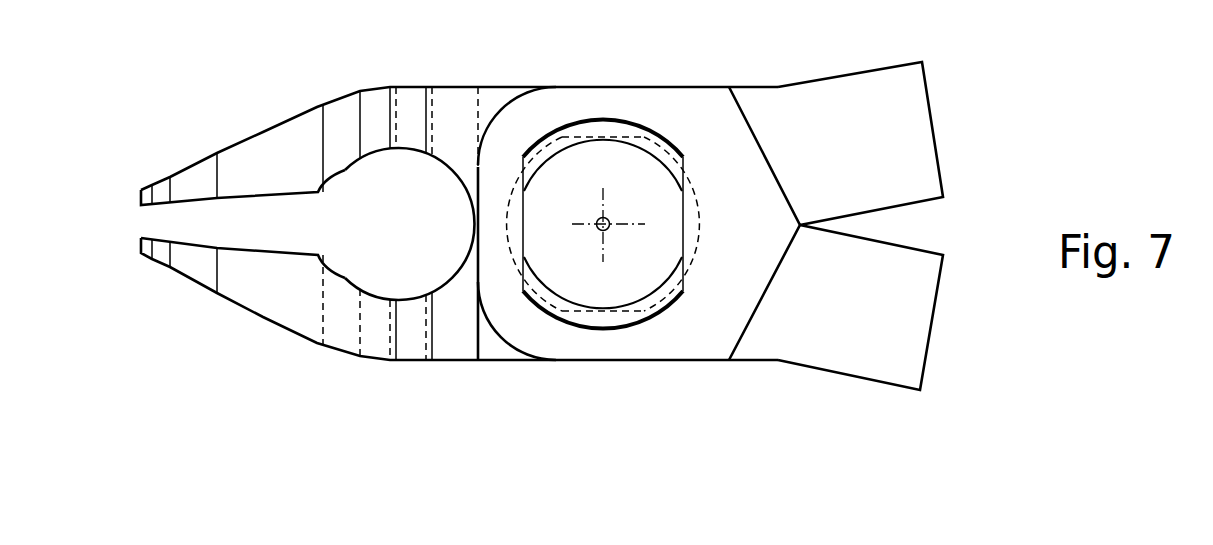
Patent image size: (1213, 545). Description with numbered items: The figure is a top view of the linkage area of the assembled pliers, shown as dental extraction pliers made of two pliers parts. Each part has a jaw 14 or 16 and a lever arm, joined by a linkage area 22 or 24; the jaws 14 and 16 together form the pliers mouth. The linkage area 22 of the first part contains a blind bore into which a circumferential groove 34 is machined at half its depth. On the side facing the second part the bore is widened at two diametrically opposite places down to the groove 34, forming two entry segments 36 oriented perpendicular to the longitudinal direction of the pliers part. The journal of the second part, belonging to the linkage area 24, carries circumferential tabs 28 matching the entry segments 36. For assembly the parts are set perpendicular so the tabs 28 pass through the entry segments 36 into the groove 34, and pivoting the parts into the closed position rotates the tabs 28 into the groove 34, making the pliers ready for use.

The jaw 14 is at (265, 287).
The jaw 16 is at (286, 166).
The linkage area 22 is at (848, 313).
The linkage area 24 is at (726, 137).
The circumferential tabs 28 is at (550, 298).
The circumferential groove 34 is at (517, 222).
The entry segments 36 is at (613, 317).